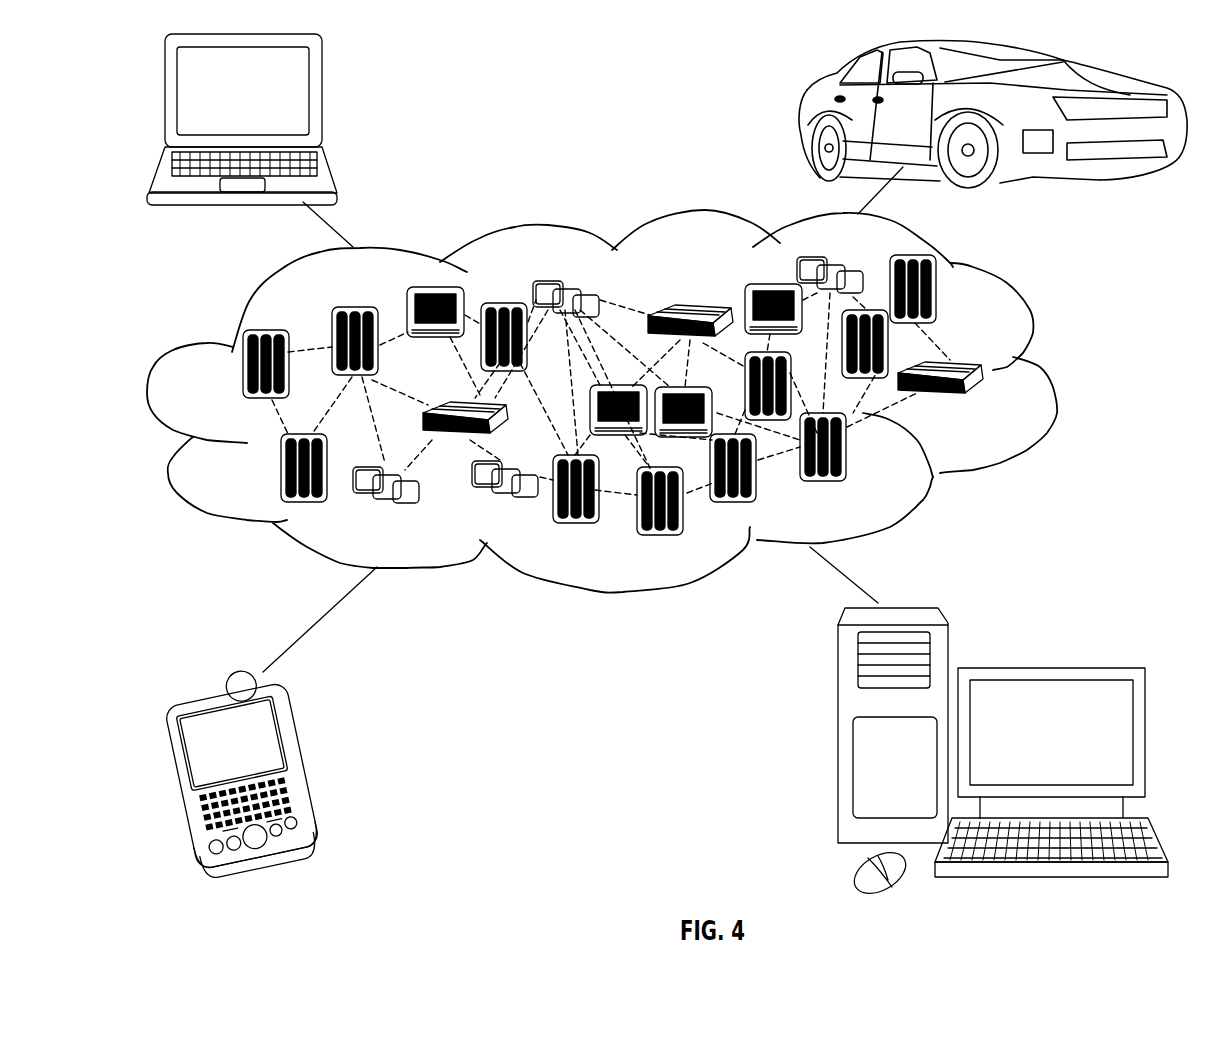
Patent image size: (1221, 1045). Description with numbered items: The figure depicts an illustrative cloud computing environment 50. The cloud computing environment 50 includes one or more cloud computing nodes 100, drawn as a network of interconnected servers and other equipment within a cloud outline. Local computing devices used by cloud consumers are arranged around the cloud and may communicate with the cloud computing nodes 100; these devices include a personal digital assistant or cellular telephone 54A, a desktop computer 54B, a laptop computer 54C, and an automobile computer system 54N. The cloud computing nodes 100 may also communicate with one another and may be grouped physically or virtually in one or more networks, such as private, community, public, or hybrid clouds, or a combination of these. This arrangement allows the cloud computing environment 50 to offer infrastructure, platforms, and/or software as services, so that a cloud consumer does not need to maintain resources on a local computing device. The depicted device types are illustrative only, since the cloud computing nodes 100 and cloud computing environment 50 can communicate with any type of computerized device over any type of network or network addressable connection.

The cloud computing environment 50 is at (1050, 370).
The cloud computing nodes 100 is at (990, 407).
The personal digital assistant or cellular telephone 54A is at (310, 762).
The desktop computer 54B is at (1047, 668).
The laptop computer 54C is at (322, 98).
The automobile computer system 54N is at (807, 117).